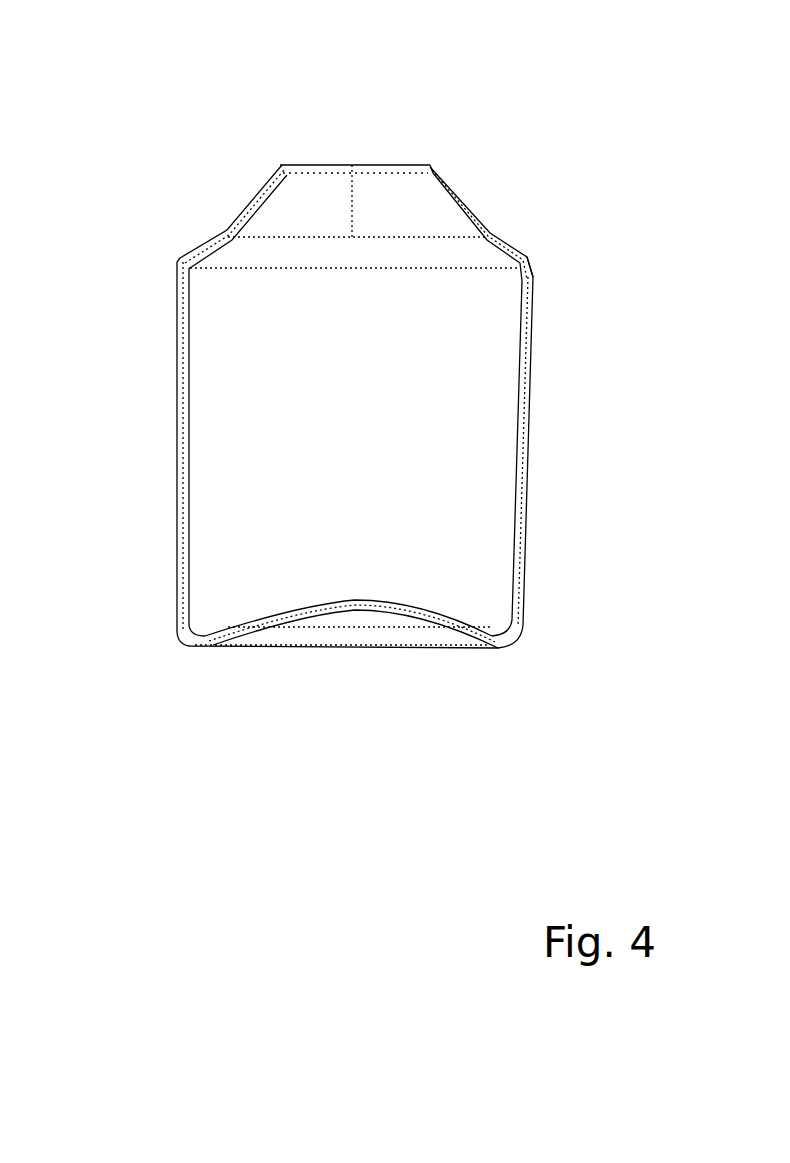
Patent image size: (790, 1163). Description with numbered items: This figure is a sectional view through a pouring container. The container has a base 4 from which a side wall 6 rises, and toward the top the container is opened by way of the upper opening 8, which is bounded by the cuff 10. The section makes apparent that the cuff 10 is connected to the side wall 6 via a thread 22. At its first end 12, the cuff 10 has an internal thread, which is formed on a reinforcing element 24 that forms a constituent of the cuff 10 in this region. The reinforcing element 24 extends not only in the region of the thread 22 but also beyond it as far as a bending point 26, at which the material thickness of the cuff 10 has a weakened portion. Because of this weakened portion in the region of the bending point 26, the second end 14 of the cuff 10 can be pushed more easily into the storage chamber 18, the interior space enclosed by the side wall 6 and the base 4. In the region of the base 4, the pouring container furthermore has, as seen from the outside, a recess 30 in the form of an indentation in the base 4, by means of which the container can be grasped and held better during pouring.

The base 4 is at (370, 605).
The side wall 6 is at (527, 431).
The upper opening 8 is at (352, 178).
The cuff 10 is at (248, 208).
The first end 12 is at (175, 285).
The second end 14 is at (430, 165).
The storage chamber 18 is at (386, 434).
The thread 22 is at (532, 283).
The reinforcing element 24 is at (523, 253).
The bending point 26 is at (490, 230).
The recess 30 is at (333, 628).